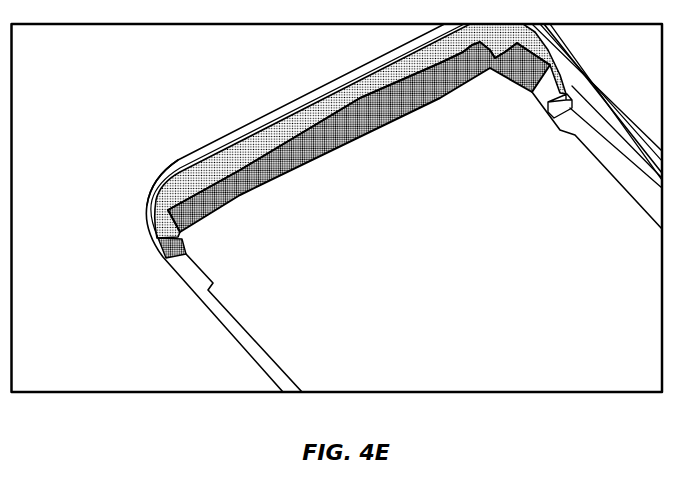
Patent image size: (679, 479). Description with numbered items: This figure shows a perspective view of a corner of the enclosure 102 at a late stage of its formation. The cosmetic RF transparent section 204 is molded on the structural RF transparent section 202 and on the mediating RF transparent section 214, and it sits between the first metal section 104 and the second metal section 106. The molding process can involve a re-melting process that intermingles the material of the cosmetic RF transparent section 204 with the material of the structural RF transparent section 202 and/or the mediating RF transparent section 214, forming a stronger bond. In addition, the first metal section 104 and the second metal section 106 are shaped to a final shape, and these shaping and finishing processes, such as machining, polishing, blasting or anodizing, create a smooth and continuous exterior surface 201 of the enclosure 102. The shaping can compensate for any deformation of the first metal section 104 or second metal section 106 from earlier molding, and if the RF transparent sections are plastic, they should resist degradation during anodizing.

The enclosure 102 is at (108, 100).
The first metal section 104 is at (232, 137).
The second metal section 106 is at (232, 341).
The exterior surface 201 is at (116, 219).
The structural RF transparent section 202 is at (347, 148).
The cosmetic RF transparent section 204 is at (158, 256).
The mediating RF transparent section 214 is at (320, 95).